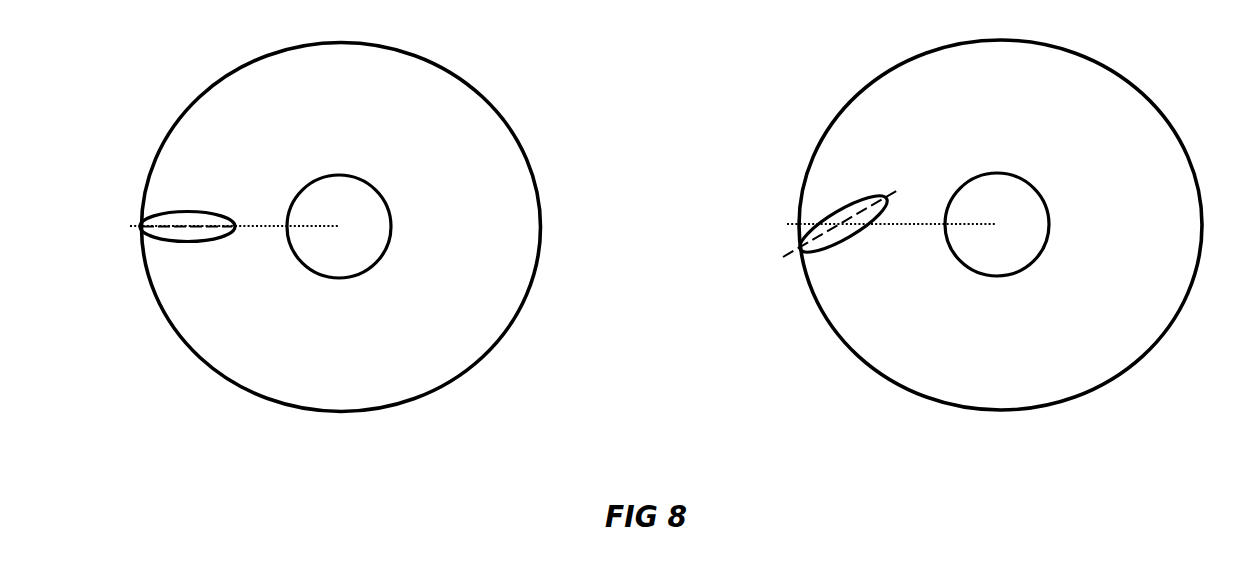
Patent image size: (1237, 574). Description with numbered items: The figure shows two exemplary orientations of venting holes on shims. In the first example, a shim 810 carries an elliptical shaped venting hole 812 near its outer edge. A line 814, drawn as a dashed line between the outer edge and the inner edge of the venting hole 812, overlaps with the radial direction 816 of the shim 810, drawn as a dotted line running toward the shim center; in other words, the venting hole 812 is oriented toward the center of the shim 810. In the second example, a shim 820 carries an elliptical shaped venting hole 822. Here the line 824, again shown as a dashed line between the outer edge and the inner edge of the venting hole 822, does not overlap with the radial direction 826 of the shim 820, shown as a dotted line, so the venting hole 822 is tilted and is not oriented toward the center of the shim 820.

The shim 810 is at (355, 117).
The elliptical shaped venting hole 812 is at (180, 217).
The line 814 is at (160, 227).
The radial direction 816 is at (270, 227).
The shim 820 is at (1015, 115).
The elliptical shaped venting hole 822 is at (837, 212).
The line 824 is at (788, 253).
The radial direction 826 is at (930, 225).